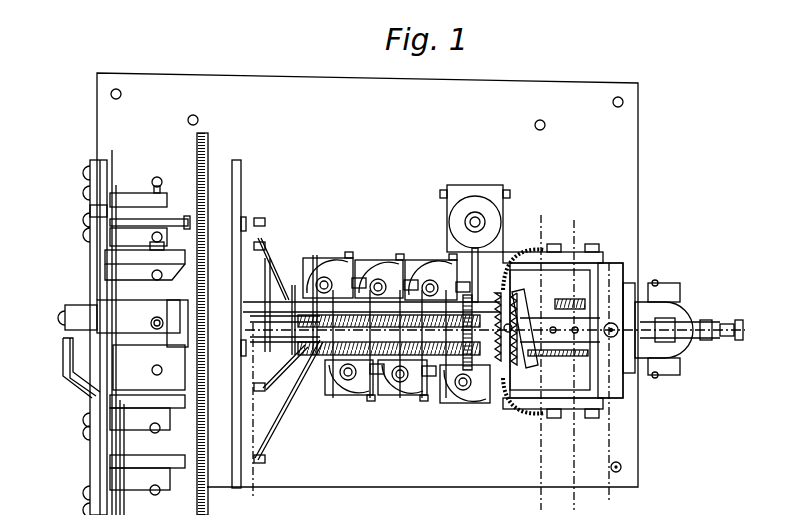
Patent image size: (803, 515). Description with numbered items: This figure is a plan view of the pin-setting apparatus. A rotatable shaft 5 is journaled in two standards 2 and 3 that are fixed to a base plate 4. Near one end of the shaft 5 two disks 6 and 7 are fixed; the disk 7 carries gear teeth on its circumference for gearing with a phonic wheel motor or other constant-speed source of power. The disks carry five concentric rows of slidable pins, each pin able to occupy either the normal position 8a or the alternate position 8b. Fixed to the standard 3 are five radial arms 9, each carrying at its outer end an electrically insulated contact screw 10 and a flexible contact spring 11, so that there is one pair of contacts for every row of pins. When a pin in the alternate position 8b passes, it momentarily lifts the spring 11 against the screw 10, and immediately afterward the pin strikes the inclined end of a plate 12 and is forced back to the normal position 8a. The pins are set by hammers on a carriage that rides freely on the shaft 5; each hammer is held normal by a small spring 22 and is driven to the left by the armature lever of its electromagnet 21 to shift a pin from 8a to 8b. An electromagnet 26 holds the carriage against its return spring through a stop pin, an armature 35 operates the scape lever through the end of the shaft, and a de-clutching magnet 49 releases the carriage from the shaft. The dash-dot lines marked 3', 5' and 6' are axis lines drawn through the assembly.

The standard 2 is at (608, 265).
The standard 3 is at (123, 407).
The base plate 4 is at (638, 185).
The rotatable shaft 5 is at (370, 340).
The disk 6 is at (245, 315).
The disk 7 is at (213, 150).
The normal pin position 8a is at (247, 350).
The alternate pin position 8b is at (246, 216).
The radial arm 9 is at (95, 282).
The contact screw 10 is at (156, 178).
The flexible contact spring 11 is at (178, 217).
The plate 12 is at (172, 228).
The electromagnet 21 is at (310, 262).
The spring 22 is at (400, 264).
The electromagnet 26 is at (470, 186).
The armature 35 is at (688, 308).
The de-clutching magnet 49 is at (462, 405).
The axis line 3' is at (539, 355).
The axis line 5' is at (433, 389).
The axis line 6' is at (574, 356).